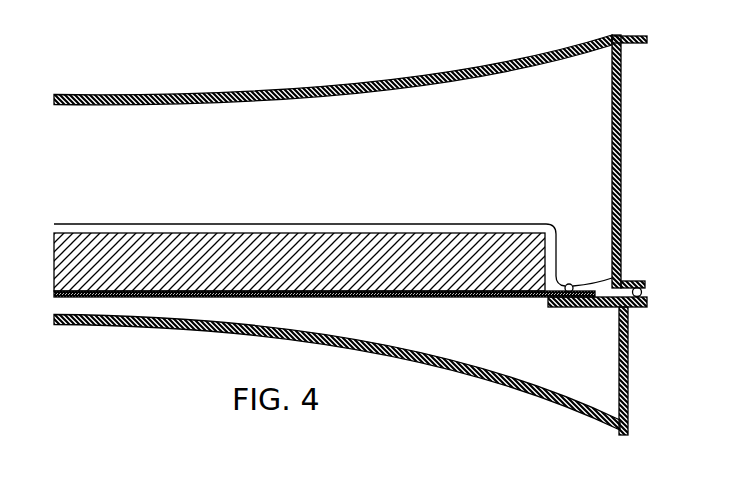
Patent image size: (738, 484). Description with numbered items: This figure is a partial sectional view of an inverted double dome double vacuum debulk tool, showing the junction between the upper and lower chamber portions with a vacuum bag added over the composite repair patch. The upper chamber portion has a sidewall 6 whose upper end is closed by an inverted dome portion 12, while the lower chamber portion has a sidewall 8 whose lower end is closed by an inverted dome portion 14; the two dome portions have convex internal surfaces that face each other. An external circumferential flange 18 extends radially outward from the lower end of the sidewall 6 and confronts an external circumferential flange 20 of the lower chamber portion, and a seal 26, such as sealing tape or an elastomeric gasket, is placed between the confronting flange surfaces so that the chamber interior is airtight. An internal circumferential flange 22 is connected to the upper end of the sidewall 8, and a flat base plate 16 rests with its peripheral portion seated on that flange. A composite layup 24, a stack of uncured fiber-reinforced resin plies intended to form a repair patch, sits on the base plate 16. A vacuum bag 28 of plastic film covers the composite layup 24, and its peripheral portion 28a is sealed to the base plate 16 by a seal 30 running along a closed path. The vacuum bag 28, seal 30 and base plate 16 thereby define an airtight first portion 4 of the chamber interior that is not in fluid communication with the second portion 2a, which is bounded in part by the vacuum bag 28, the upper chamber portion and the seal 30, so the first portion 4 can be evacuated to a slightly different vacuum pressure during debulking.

The inverted dome portion 12 is at (199, 95).
The inverted dome portion 14 is at (168, 330).
The sidewall 6 is at (622, 110).
The sidewall 8 is at (629, 368).
The external circumferential flange 18 is at (641, 280).
The internal circumferential flange 22 is at (610, 308).
The composite layup 24 is at (418, 233).
The base plate 16 is at (436, 298).
The vacuum bag 28 is at (355, 223).
The peripheral portion 28a is at (570, 284).
The seal 30 is at (622, 280).
The seal 26 is at (647, 291).
The external circumferential flange 20 is at (633, 308).
The second portion 2a is at (603, 97).
The first portion 4 is at (553, 228).